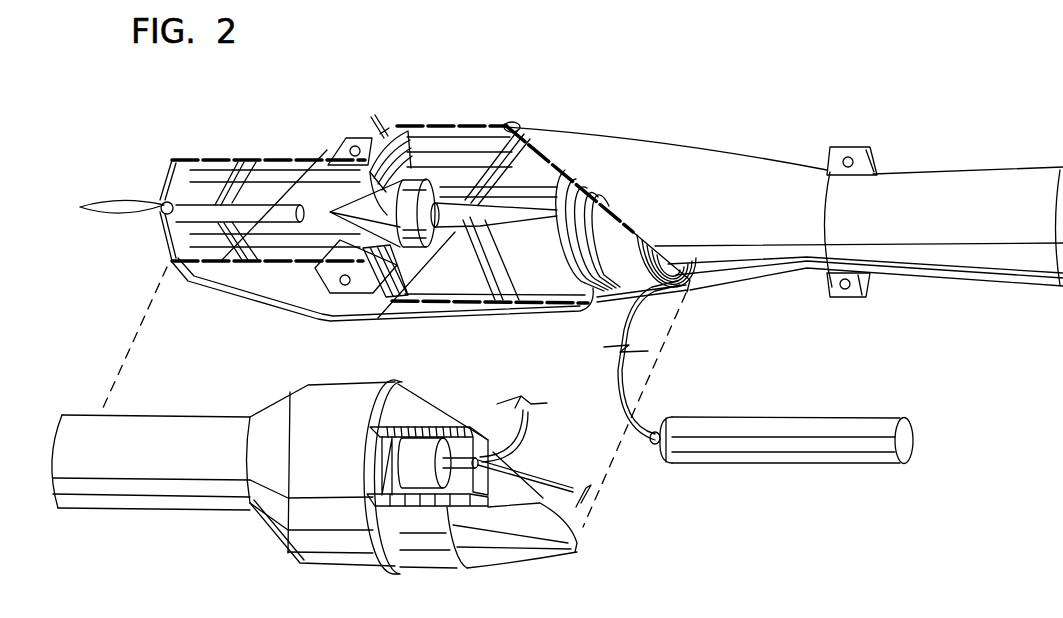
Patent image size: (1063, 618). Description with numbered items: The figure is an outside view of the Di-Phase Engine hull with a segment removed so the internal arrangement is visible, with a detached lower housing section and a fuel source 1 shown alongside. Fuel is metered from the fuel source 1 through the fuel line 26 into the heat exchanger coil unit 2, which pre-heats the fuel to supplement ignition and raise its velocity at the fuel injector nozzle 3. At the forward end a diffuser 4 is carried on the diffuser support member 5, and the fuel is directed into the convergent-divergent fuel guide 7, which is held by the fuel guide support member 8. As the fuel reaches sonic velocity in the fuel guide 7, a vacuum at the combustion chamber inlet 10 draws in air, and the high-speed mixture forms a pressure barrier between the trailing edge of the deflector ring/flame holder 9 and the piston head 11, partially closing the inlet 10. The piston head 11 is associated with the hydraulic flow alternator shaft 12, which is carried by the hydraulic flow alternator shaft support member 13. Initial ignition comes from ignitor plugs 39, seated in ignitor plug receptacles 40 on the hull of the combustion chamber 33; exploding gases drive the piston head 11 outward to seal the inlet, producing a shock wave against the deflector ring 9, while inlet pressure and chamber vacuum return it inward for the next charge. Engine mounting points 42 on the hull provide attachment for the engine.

The fuel source 1 is at (718, 417).
The heat exchanger coil unit 2 is at (686, 293).
The fuel injector nozzle 3 is at (226, 266).
The diffuser 4 is at (105, 198).
The diffuser support member 5 is at (173, 177).
The convergent-divergent fuel guide 7 is at (296, 203).
The fuel guide support member 8 is at (230, 163).
The deflector ring/flame holder 9 is at (327, 150).
The combustion chamber inlet 10 is at (400, 228).
The piston head 11 is at (428, 205).
The hydraulic flow alternator shaft 12 is at (483, 300).
The hydraulic flow alternator shaft support member 13 is at (516, 150).
The fuel line 26 is at (378, 318).
The combustion chamber 33 is at (557, 278).
The ignitor plug 39 is at (386, 127).
The ignitor plug resceptical 40 is at (388, 126).
The engine mounting point 42 is at (853, 147).